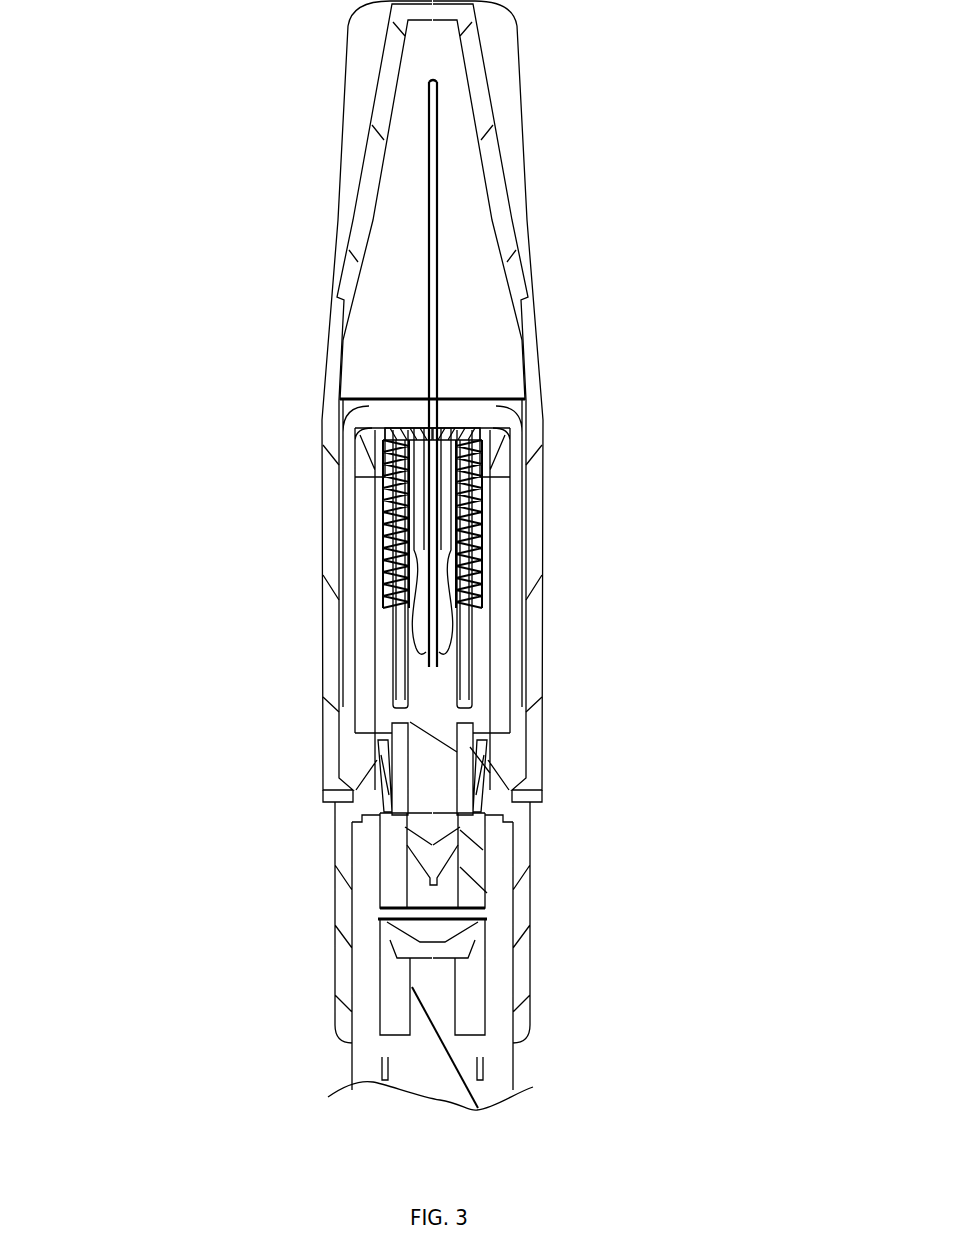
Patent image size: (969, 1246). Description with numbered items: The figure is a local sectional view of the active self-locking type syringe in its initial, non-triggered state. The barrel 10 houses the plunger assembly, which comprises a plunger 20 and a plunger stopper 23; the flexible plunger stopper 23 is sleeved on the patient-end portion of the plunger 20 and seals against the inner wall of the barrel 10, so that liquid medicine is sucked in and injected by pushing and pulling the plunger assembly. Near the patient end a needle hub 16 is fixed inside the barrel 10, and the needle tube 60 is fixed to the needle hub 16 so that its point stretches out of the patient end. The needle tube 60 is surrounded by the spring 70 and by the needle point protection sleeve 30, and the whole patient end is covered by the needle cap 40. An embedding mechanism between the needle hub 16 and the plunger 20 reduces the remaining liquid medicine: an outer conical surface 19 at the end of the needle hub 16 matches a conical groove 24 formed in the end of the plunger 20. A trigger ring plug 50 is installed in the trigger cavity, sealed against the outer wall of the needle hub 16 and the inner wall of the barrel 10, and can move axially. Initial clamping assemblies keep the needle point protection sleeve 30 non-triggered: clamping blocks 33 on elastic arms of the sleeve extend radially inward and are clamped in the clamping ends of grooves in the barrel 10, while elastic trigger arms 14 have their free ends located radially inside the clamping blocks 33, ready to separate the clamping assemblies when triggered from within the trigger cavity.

The barrel 10 is at (393, 957).
The trigger arm 14 is at (375, 757).
The needle hub 16 is at (435, 682).
The outer conical surface 19 is at (457, 875).
The plunger 20 is at (433, 1078).
The plunger stopper 23 is at (462, 987).
The conical groove 24 is at (407, 933).
The needle point protection sleeve 30 is at (498, 557).
The clamping block 33 is at (492, 738).
The needle cap 40 is at (477, 110).
The trigger ring plug 50 is at (395, 847).
The needle tube 60 is at (435, 338).
The spring 70 is at (478, 494).